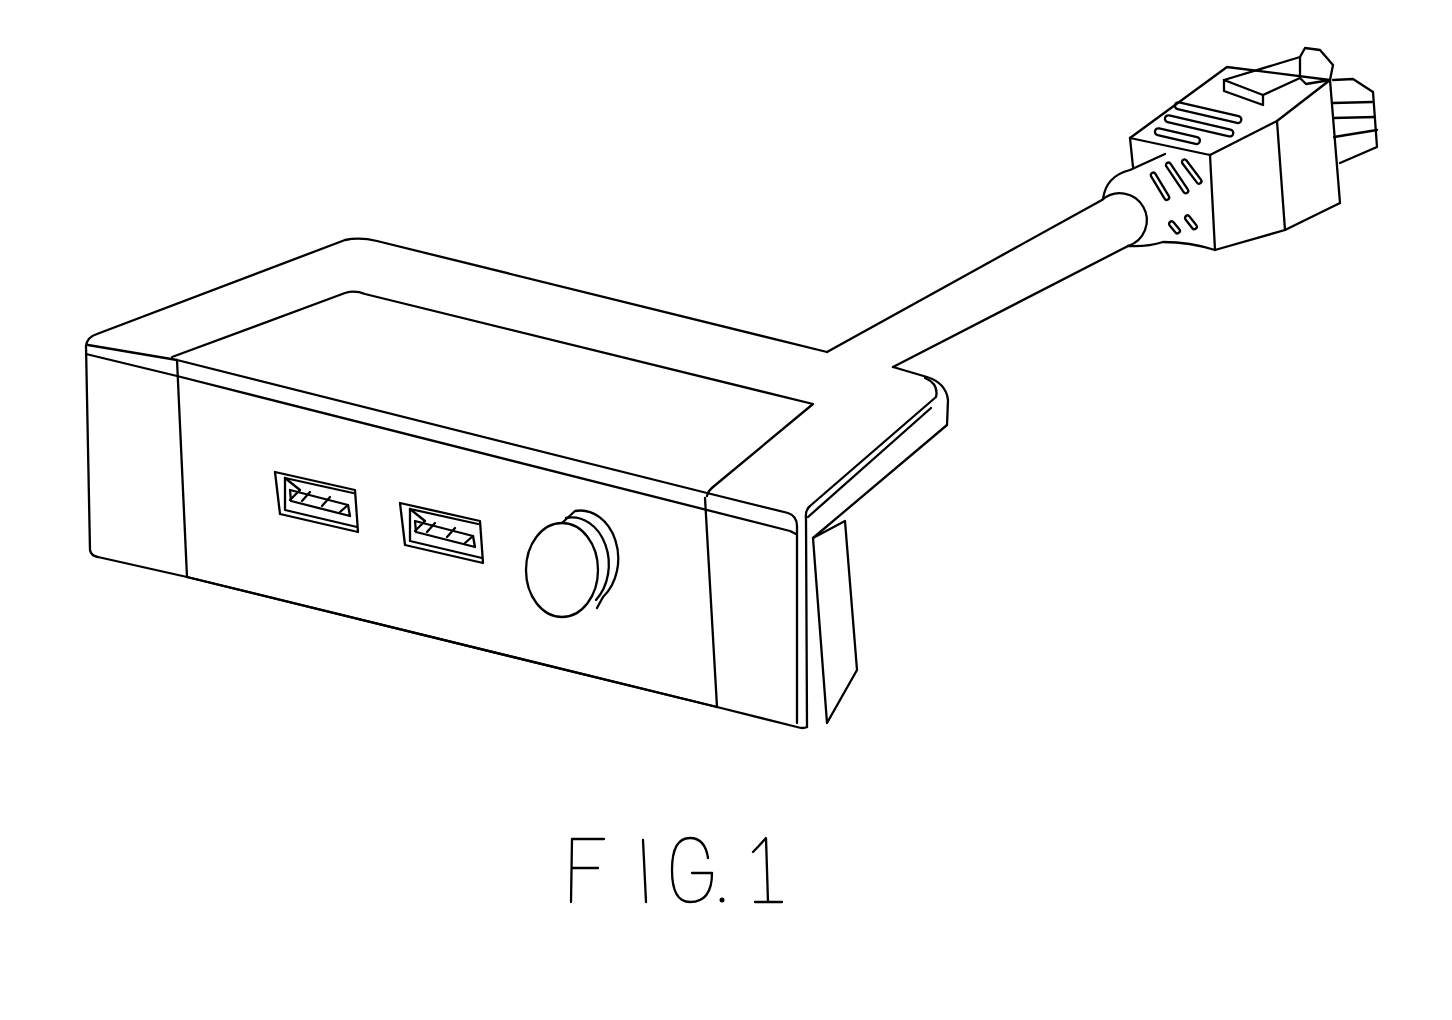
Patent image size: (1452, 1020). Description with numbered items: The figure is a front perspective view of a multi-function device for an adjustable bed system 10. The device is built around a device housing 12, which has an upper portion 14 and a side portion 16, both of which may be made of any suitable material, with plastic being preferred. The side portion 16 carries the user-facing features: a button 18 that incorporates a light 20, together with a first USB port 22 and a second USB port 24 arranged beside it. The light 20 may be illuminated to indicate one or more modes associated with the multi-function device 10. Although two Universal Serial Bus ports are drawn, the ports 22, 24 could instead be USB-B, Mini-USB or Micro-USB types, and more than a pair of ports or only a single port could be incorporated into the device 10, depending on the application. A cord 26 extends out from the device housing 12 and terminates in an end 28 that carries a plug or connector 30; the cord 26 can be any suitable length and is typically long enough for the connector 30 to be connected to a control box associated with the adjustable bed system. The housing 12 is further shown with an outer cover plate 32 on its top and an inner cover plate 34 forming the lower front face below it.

The multi-function device for an adjustable bed system 10 is at (557, 236).
The device housing 12 is at (740, 310).
The upper portion 14 is at (405, 286).
The side portion 16 is at (227, 537).
The button 18 is at (560, 595).
The light 20 is at (610, 568).
The first USB port 22 is at (313, 522).
The second USB port 24 is at (440, 553).
The cord 26 is at (943, 287).
The end 28 is at (1391, 115).
The plug or connector 30 is at (1247, 238).
The outer cover plate 32 is at (620, 325).
The inner cover plate 34 is at (628, 660).